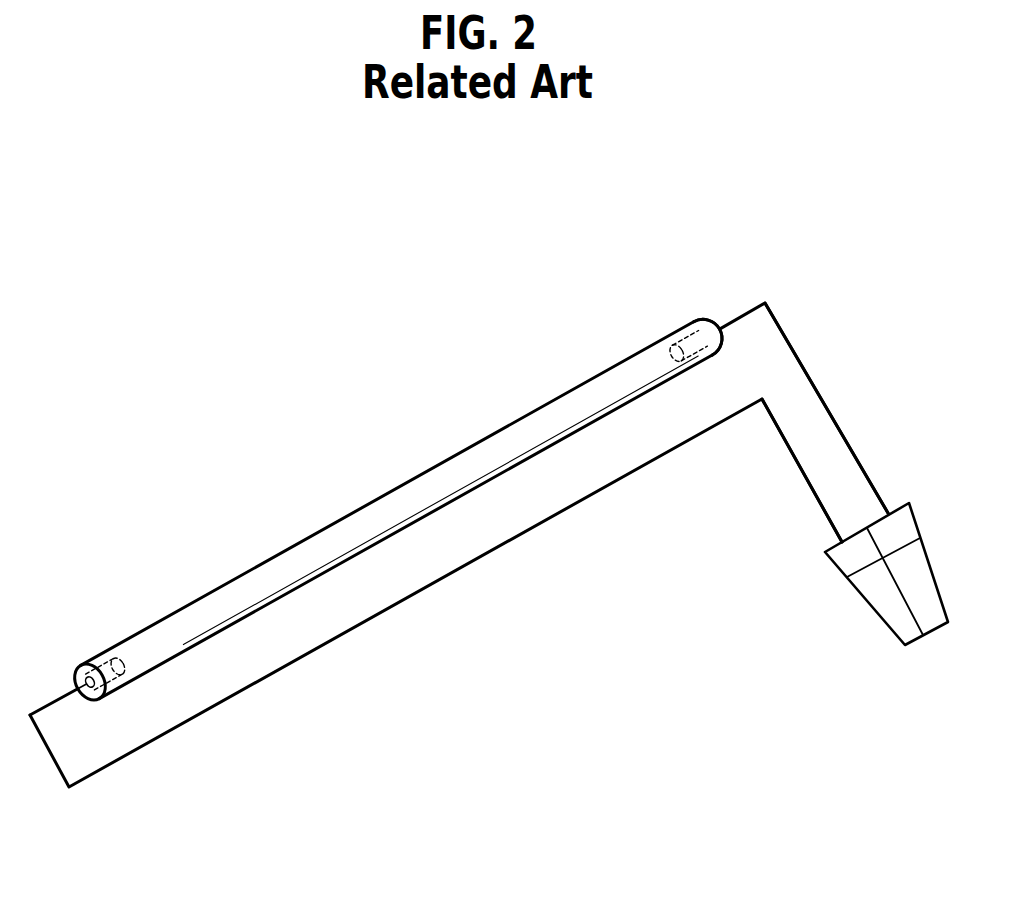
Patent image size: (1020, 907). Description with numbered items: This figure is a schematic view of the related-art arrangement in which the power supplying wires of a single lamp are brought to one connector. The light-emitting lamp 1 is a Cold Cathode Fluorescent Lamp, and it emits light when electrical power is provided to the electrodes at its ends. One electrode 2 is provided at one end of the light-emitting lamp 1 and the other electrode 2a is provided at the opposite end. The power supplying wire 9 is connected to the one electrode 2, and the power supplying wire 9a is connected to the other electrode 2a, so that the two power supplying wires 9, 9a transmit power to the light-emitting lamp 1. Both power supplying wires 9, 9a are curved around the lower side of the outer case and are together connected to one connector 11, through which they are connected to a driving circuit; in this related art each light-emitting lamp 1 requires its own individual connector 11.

The light-emitting lamp 1 is at (408, 483).
The electrode 2 is at (103, 658).
The electrode 2a is at (680, 340).
The power supplying wire 9 is at (798, 463).
The power supplying wire 9a is at (808, 376).
The connector 11 is at (873, 595).